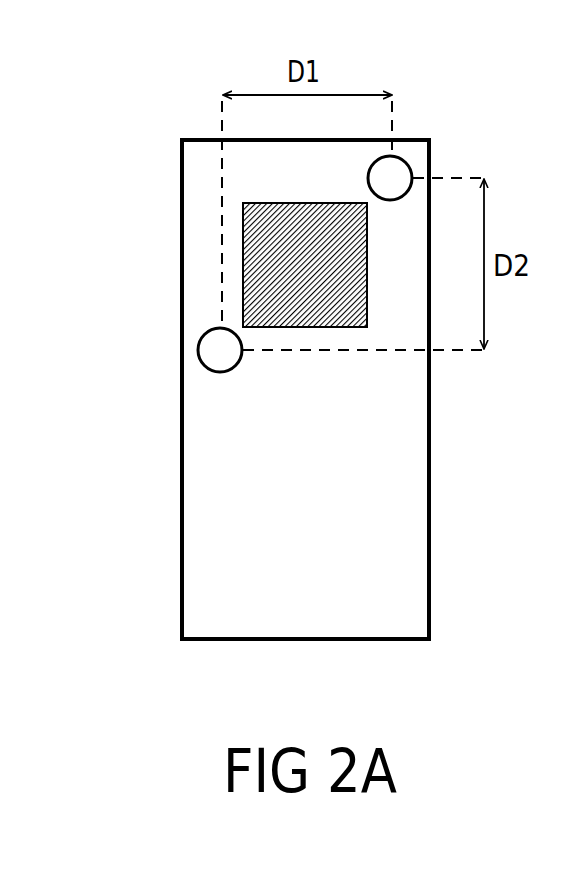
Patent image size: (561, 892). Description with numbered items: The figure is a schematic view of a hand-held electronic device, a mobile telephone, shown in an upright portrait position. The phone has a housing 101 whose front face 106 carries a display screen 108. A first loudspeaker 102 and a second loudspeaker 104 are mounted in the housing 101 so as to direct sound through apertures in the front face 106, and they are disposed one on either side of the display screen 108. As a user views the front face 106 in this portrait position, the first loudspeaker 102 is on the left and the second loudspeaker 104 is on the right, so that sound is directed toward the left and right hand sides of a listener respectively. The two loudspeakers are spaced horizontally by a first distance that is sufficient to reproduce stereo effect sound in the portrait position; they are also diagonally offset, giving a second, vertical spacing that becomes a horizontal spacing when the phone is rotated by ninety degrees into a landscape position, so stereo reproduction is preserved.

The housing 101 is at (430, 500).
The first loudspeaker 102 is at (205, 362).
The second loudspeaker 104 is at (405, 160).
The front face 106 is at (277, 507).
The display screen 108 is at (283, 270).